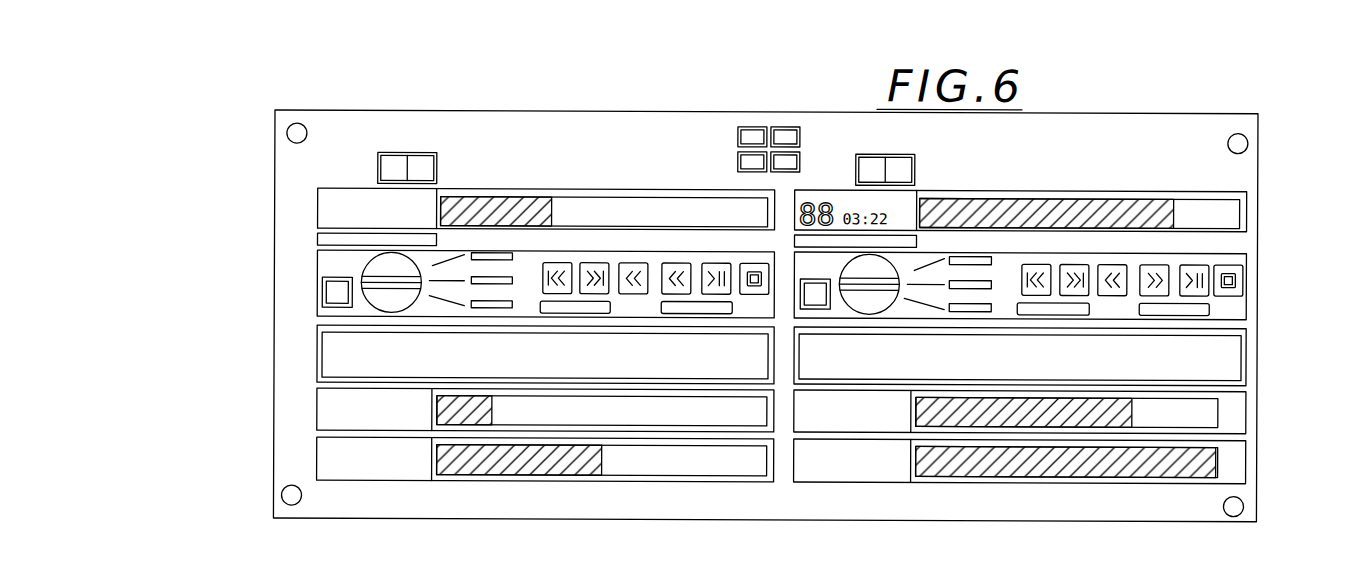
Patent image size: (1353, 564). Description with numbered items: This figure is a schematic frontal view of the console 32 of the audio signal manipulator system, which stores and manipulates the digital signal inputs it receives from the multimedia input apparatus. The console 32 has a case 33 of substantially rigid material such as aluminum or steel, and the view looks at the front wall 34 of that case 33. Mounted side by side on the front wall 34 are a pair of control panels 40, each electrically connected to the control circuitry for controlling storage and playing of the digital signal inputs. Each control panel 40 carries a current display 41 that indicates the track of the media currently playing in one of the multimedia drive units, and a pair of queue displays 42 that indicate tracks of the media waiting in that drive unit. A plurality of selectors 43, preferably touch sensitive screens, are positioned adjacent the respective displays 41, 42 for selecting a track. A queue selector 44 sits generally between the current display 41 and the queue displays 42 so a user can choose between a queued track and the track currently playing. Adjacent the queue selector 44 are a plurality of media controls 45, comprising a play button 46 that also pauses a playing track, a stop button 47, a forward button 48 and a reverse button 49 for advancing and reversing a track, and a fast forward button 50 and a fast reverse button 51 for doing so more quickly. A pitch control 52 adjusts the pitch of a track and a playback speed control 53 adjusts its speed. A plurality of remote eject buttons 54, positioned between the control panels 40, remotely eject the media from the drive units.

The console 32 is at (1252, 129).
The case 33 is at (1248, 164).
The front wall 34 is at (518, 119).
The control panels 40 is at (790, 488).
The current display 41 is at (317, 218).
The queue displays 42 is at (315, 447).
The selectors 43 is at (1242, 414).
The queue selector 44 is at (375, 267).
The media controls 45 is at (663, 249).
The play button 46 is at (1207, 261).
The stop button 47 is at (1243, 269).
The forward button 48 is at (1153, 260).
The reverse button 49 is at (1112, 260).
The fast forward button 50 is at (1075, 260).
The fast reverse button 51 is at (1038, 260).
The pitch control 52 is at (1083, 302).
The playback speed control 53 is at (1207, 306).
The remote eject buttons 54 is at (772, 123).